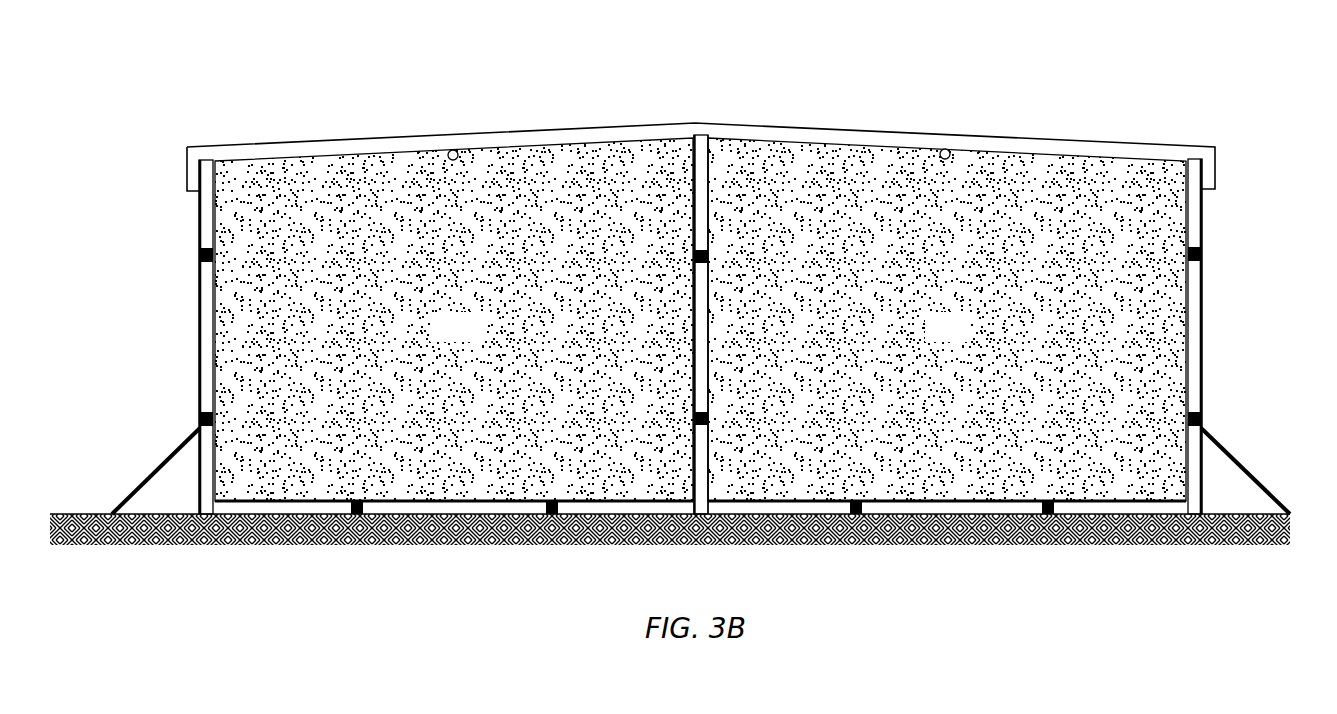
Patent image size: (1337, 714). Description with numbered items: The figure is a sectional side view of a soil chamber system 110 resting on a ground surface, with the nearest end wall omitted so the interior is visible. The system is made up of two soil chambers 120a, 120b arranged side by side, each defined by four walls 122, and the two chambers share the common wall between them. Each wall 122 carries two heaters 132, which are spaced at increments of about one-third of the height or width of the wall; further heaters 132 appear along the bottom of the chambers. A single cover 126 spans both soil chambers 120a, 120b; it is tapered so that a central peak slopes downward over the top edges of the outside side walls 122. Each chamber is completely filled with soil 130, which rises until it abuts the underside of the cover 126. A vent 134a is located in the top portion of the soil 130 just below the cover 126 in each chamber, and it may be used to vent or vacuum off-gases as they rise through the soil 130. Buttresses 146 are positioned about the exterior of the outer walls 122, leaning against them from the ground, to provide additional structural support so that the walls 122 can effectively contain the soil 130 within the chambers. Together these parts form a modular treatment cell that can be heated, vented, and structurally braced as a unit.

The soil chamber system 110 is at (1056, 48).
The cover 126 is at (940, 131).
The wall 122 is at (199, 333).
The soil chamber 120a is at (582, 156).
The soil chamber 120b is at (805, 153).
The soil 130 is at (472, 339).
The vent 134a is at (453, 160).
The heater 132 is at (199, 256).
The buttress 146 is at (152, 490).